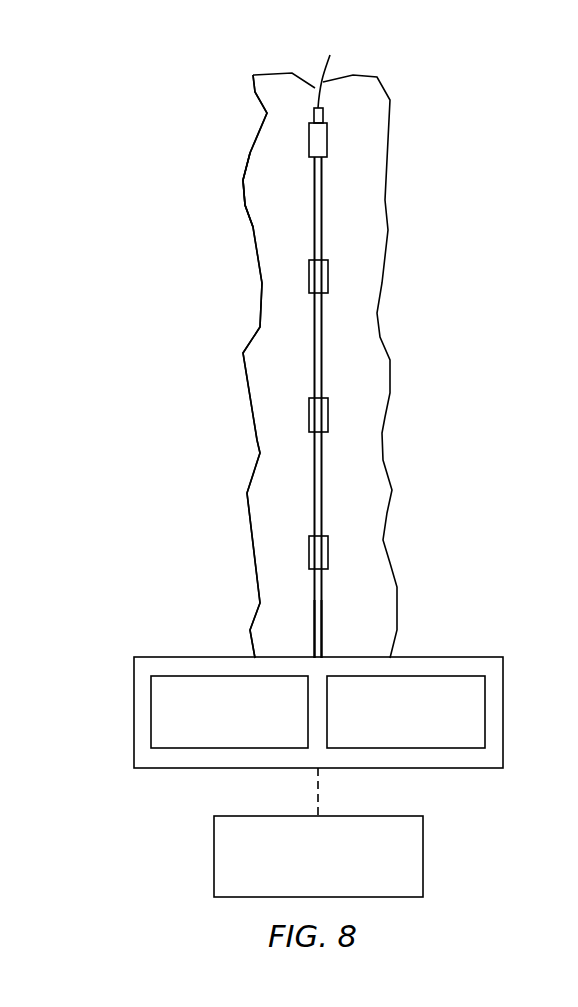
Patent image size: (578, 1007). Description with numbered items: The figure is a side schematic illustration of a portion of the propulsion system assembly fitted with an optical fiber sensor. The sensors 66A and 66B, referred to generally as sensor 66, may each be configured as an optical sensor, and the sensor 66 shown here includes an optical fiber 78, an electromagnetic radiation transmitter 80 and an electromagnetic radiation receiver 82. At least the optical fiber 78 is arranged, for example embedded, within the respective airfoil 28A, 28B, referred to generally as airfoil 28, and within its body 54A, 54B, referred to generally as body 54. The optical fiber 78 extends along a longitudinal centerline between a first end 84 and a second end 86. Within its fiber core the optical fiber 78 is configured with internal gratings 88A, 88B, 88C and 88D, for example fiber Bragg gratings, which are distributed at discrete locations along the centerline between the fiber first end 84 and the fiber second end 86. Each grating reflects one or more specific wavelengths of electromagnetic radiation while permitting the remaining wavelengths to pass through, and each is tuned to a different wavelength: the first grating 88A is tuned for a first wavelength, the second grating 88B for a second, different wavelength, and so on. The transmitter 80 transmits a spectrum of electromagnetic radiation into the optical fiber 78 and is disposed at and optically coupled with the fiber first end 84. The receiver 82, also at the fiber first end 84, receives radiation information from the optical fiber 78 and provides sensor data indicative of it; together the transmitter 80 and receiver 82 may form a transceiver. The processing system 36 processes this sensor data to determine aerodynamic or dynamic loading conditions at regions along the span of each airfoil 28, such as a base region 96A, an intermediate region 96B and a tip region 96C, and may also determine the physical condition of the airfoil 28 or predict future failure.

The airfoil 28 is at (227, 359).
The upstream airfoil 28A is at (227, 359).
The downstream airfoil 28B is at (245, 92).
The tip region 96C is at (236, 130).
The intermediate region 96B is at (230, 383).
The base region 96A is at (230, 604).
The body 54 is at (164, 190).
The body of upstream airfoil 54A is at (164, 190).
The body of downstream airfoil 54B is at (258, 180).
The second end of optical fiber 86 is at (331, 69).
The sensor 66 is at (415, 85).
The sensor 66A is at (415, 85).
The sensor 66B is at (334, 105).
The optical fiber 78 is at (340, 184).
The fourth grating 88D is at (327, 140).
The third grating 88C is at (328, 278).
The second grating 88B is at (328, 417).
The first grating 88A is at (328, 553).
The first end of optical fiber 84 is at (323, 658).
The electromagnetic radiation transmitter 80 is at (150, 722).
The electromagnetic radiation receiver 82 is at (485, 726).
The processing system 36 is at (436, 855).